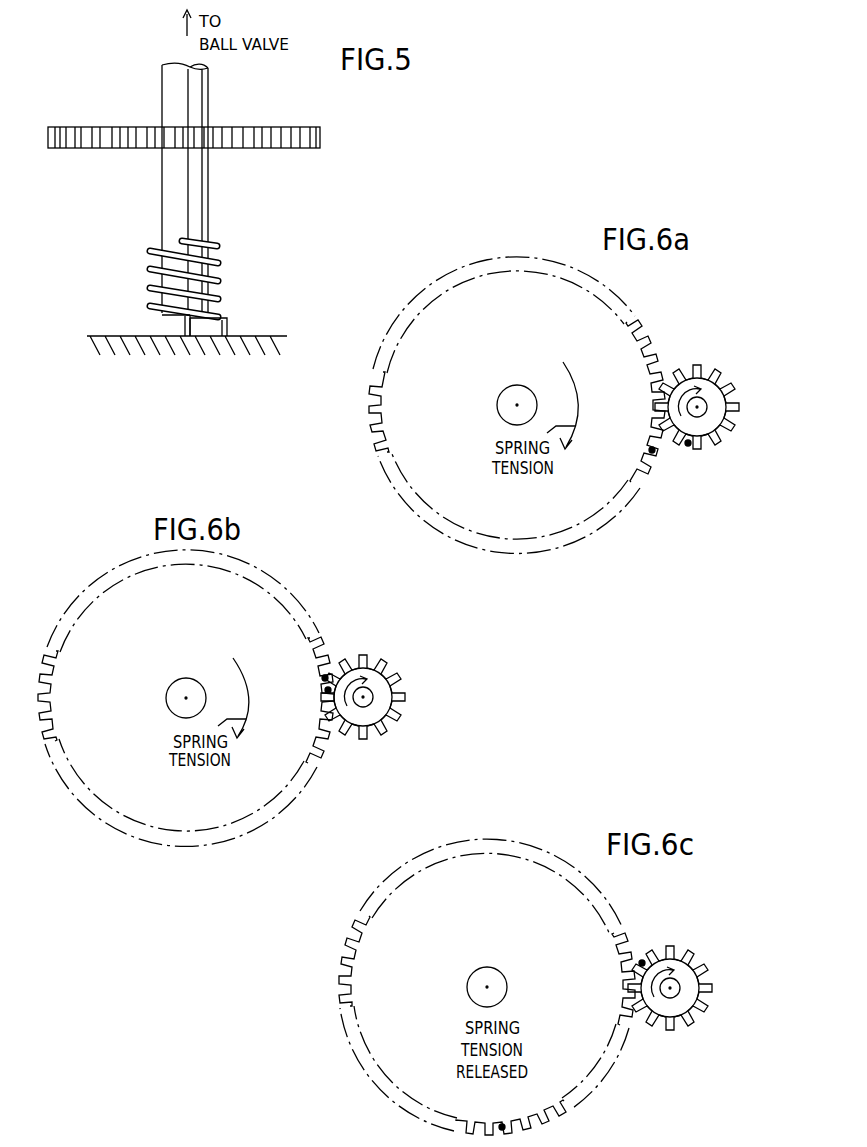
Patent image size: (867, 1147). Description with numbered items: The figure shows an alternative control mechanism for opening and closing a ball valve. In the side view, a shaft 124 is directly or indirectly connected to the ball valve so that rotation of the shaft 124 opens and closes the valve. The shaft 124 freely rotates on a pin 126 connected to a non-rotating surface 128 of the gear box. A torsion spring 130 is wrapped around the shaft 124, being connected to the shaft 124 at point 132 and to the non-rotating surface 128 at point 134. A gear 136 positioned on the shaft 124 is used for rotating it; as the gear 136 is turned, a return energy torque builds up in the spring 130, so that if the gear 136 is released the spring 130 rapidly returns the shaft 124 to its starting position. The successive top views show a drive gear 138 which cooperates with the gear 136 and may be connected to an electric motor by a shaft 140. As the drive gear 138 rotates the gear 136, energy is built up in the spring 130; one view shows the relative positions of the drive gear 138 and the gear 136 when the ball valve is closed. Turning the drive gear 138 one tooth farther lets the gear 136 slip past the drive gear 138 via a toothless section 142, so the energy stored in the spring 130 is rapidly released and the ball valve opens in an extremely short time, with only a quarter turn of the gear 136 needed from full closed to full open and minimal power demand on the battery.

In FIG. 5, the shaft 124 is at (167, 80).
In FIG. 6a, the shaft 124 is at (505, 402).
In FIG. 6b, the shaft 124 is at (176, 696).
In FIG. 6c, the shaft 124 is at (472, 988).
In FIG. 5, the pin 126 is at (185, 328).
In FIG. 5, the non-rotating surface 128 is at (100, 336).
In FIG. 5, the torsion spring 130 is at (150, 271).
In FIG. 5, the point 132 is at (183, 238).
In FIG. 5, the point 134 is at (226, 318).
In FIG. 5, the gear 136 is at (253, 127).
In FIG. 6a, the gear 136 is at (526, 329).
In FIG. 6b, the gear 136 is at (184, 646).
In FIG. 6c, the gear 136 is at (496, 931).
In FIG. 6a, the drive gear 138 is at (705, 385).
In FIG. 6b, the drive gear 138 is at (370, 675).
In FIG. 6c, the drive gear 138 is at (690, 980).
In FIG. 6a, the shaft 140 is at (708, 410).
In FIG. 6b, the shaft 140 is at (373, 697).
In FIG. 6c, the shaft 140 is at (678, 996).
In FIG. 6a, the toothless section 142 is at (714, 438).
In FIG. 6b, the toothless section 142 is at (338, 718).
In FIG. 6c, the toothless section 142 is at (625, 984).